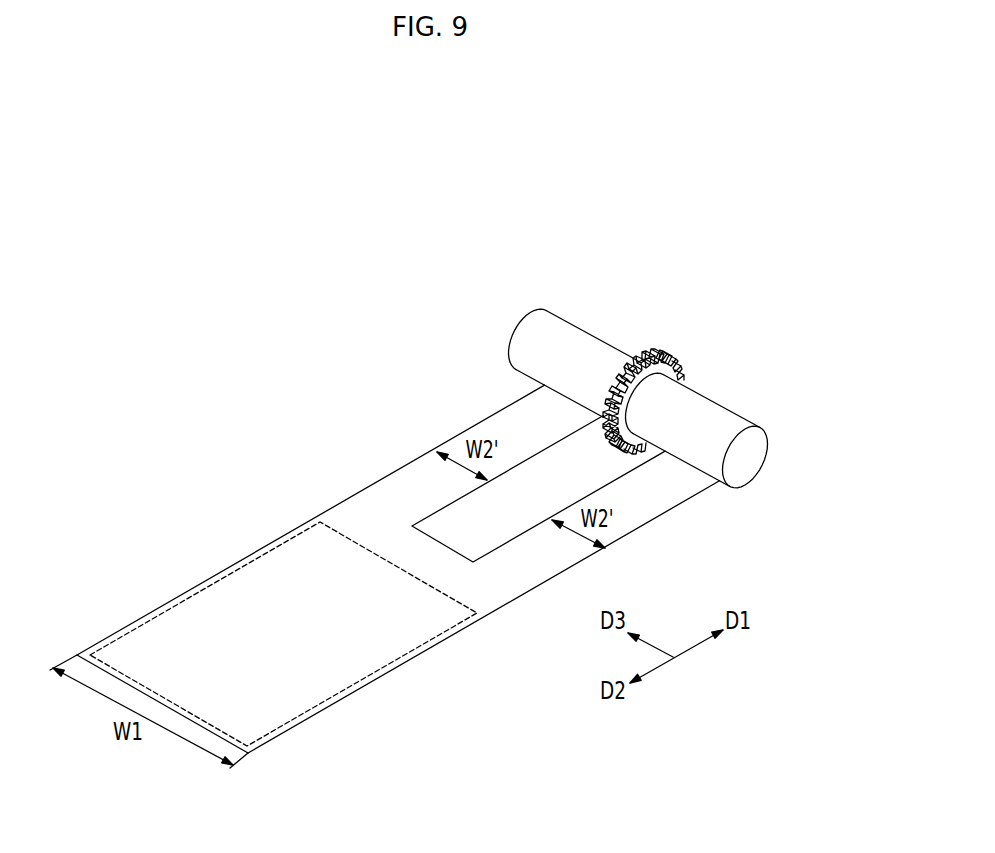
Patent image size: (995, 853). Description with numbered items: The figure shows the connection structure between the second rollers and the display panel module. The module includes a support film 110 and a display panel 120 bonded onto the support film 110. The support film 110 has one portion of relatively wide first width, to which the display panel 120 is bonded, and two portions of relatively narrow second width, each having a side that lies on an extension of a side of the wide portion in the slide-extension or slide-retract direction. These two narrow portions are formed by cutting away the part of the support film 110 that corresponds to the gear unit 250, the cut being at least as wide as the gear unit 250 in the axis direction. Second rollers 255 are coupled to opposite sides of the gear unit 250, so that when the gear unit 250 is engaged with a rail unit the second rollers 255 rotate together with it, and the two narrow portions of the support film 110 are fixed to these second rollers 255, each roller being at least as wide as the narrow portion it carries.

The support film 110 is at (390, 672).
The display panel 120 is at (297, 720).
The gear unit 250 is at (655, 352).
The second roller 255 is at (577, 332).